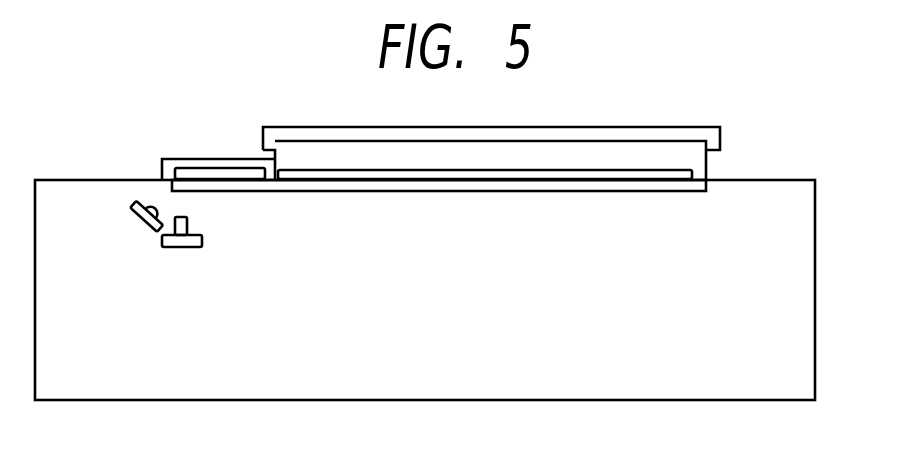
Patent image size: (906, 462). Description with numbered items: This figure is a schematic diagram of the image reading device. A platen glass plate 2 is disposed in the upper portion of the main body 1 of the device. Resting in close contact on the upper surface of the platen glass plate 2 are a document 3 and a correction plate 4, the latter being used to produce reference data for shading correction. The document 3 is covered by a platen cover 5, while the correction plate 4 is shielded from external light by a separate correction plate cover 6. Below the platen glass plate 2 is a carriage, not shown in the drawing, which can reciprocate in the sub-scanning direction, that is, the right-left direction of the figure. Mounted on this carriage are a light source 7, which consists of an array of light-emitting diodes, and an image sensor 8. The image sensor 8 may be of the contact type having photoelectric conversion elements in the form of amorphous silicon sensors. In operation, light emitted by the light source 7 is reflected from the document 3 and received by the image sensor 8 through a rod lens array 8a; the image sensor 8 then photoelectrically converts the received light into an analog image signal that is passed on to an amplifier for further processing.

The main body 1 is at (100, 400).
The platen glass plate 2 is at (520, 191).
The document 3 is at (617, 175).
The correction plate 4 is at (233, 176).
The platen cover 5 is at (610, 127).
The correction plate cover 6 is at (158, 176).
The light source 7 is at (157, 203).
The image sensor 8 is at (180, 248).
The rod lens array 8a is at (189, 222).